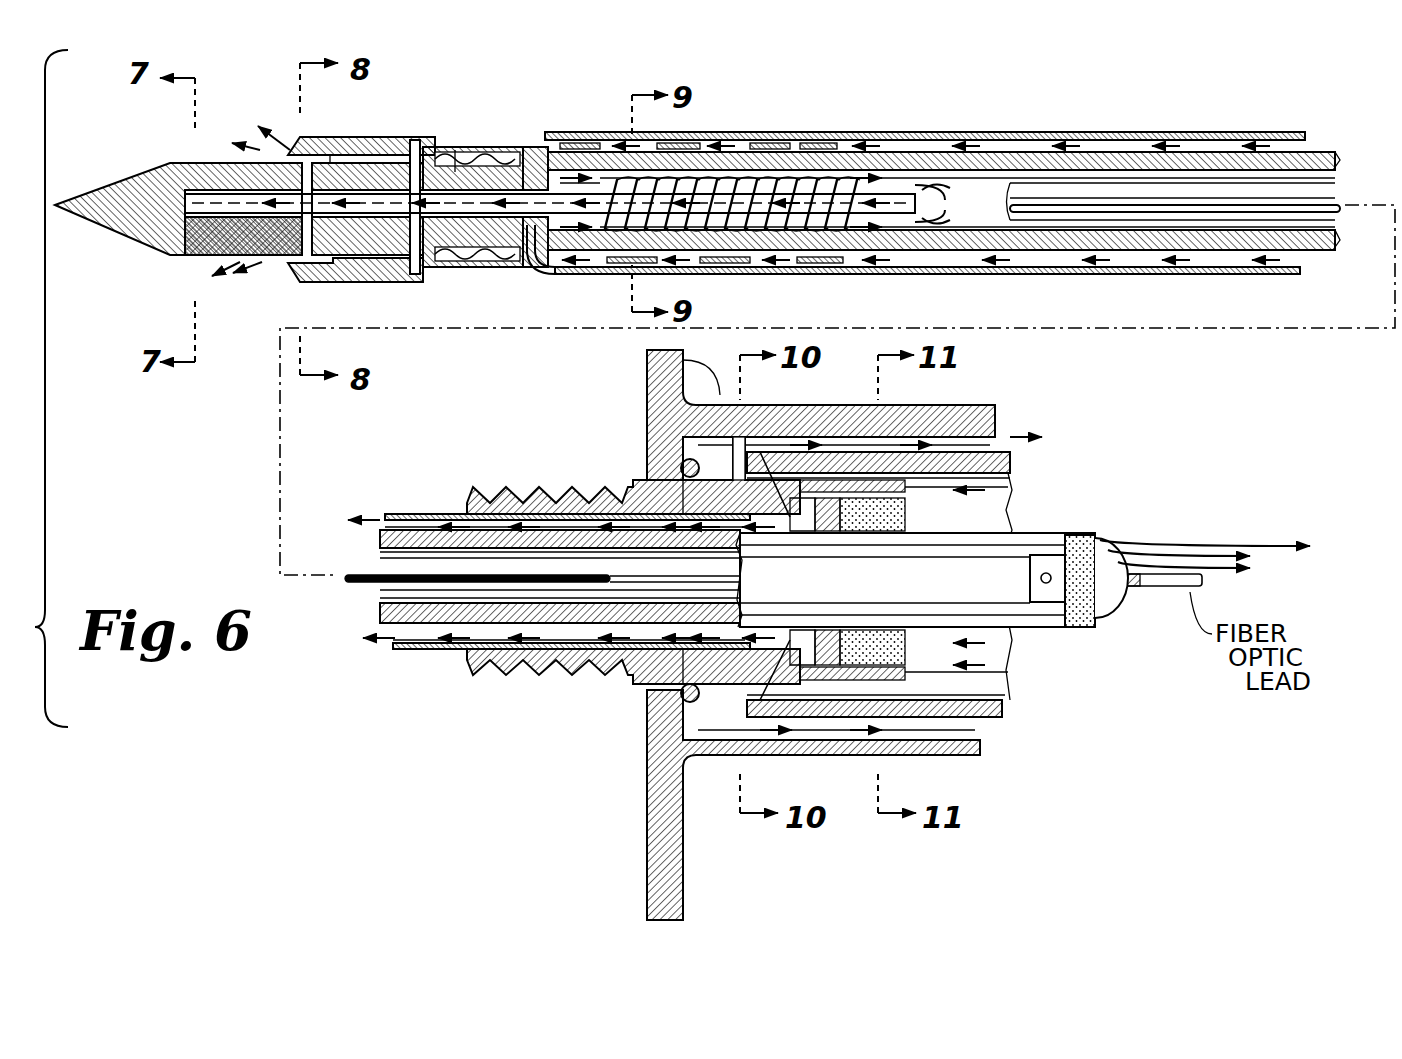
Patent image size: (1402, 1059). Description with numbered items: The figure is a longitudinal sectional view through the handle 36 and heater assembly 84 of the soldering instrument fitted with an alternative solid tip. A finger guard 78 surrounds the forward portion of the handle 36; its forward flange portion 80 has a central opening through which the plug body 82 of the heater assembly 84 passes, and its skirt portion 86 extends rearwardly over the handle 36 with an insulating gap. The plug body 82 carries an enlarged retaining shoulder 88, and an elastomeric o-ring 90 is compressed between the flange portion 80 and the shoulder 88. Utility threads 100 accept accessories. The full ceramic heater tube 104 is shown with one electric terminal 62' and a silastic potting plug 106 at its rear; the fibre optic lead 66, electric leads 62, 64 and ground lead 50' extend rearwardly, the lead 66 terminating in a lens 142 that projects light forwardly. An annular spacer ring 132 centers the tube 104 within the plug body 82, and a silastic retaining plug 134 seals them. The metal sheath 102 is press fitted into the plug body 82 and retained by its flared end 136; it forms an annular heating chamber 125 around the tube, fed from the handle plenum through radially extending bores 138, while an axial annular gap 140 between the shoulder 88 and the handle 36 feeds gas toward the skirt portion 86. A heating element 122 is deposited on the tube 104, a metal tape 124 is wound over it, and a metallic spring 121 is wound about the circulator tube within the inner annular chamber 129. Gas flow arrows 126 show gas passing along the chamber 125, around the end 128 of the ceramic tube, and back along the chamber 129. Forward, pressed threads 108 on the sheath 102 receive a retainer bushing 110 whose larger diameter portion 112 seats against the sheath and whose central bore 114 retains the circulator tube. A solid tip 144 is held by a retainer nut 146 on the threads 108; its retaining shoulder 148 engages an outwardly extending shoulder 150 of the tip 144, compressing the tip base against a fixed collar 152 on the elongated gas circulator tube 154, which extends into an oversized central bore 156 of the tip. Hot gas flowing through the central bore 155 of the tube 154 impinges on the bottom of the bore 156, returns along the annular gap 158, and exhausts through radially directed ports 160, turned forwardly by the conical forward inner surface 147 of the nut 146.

The handle 36 is at (1012, 450).
The ground lead 50' is at (1251, 503).
The electric lead 62 is at (1251, 540).
The electric terminal 62' is at (1073, 533).
The electric lead 64 is at (1200, 566).
The fibre optic lead 66 is at (1340, 208).
The finger guard 78 is at (694, 405).
The forward flange portion 80 is at (684, 860).
The plug body 82 is at (655, 480).
The heater assembly 84 is at (535, 468).
The skirt portion 86 is at (975, 407).
The retaining shoulder 88 is at (683, 748).
The o-ring 90 is at (683, 462).
The utility threads 100 is at (515, 675).
The metal sheath 102 is at (1232, 132).
The ceramic heater tube 104 is at (1322, 152).
The silastic potting material 106 is at (1122, 606).
The pressed threads 108 is at (495, 170).
The retainer bushing 110 is at (520, 155).
The forward larger diameter portion 112 is at (414, 140).
The central bore 114 is at (518, 266).
The metallic spring 121 is at (855, 180).
The heating element 122 is at (742, 143).
The metal tape 124 is at (782, 150).
The annular heating chamber 125 is at (964, 148).
The gas flow arrows 126 is at (932, 190).
The end of the ceramic tube 128 is at (545, 190).
The inner annular chamber 129 is at (590, 182).
The annular spacer ring 132 is at (745, 582).
The retaining plug 134 is at (905, 515).
The flared end 136 is at (805, 512).
The radially extending bores 138 is at (780, 515).
The axial annular gap 140 is at (740, 440).
The lens 142 is at (1005, 180).
The solid tip 144 is at (178, 162).
The retainer nut 146 is at (330, 137).
The forward inner surface 147 is at (335, 295).
The retaining shoulder 148 is at (395, 280).
The outwardly extending shoulder 150 is at (300, 162).
The fixed collar 152 is at (448, 267).
The elongated gas circulator tube 154 is at (270, 256).
The central bore 155 is at (460, 150).
The oversized central bore 156 is at (208, 190).
The annular gap 158 is at (175, 254).
The radially directed ports 160 is at (285, 264).